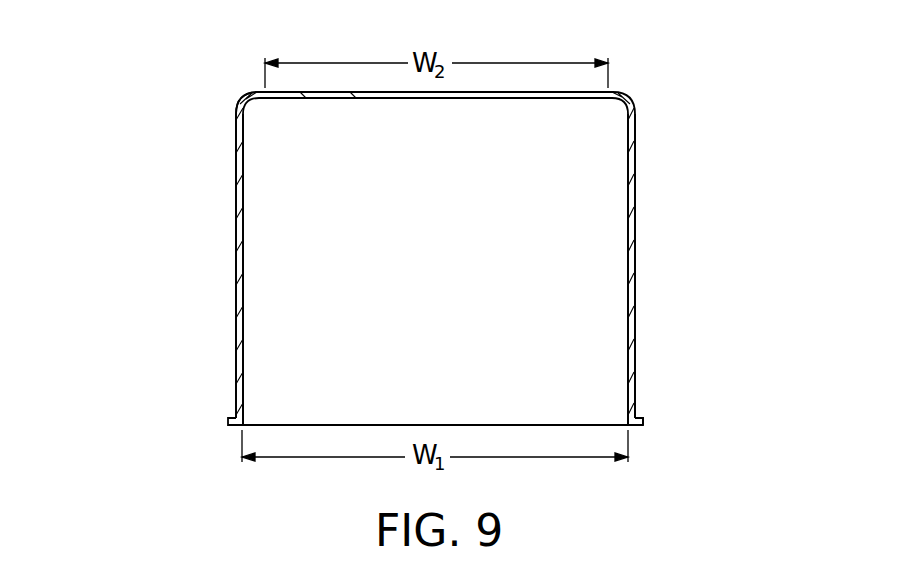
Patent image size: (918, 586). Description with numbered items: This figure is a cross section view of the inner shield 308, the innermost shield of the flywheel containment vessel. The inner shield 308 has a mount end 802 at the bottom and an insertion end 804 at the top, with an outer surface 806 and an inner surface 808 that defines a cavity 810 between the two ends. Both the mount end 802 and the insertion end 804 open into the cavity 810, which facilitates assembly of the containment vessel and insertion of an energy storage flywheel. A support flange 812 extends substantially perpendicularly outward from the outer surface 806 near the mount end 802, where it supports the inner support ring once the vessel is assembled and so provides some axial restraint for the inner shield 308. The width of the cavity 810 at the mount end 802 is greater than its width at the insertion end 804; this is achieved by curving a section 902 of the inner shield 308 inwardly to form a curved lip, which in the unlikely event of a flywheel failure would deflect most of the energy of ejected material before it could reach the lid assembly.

The inner shield 308 is at (150, 118).
The curved section 902 is at (635, 98).
The insertion end 804 is at (261, 91).
The inner surface 808 is at (243, 238).
The outer surface 806 is at (635, 238).
The cavity 810 is at (456, 229).
The support flange 812 is at (645, 421).
The mount end 802 is at (636, 427).